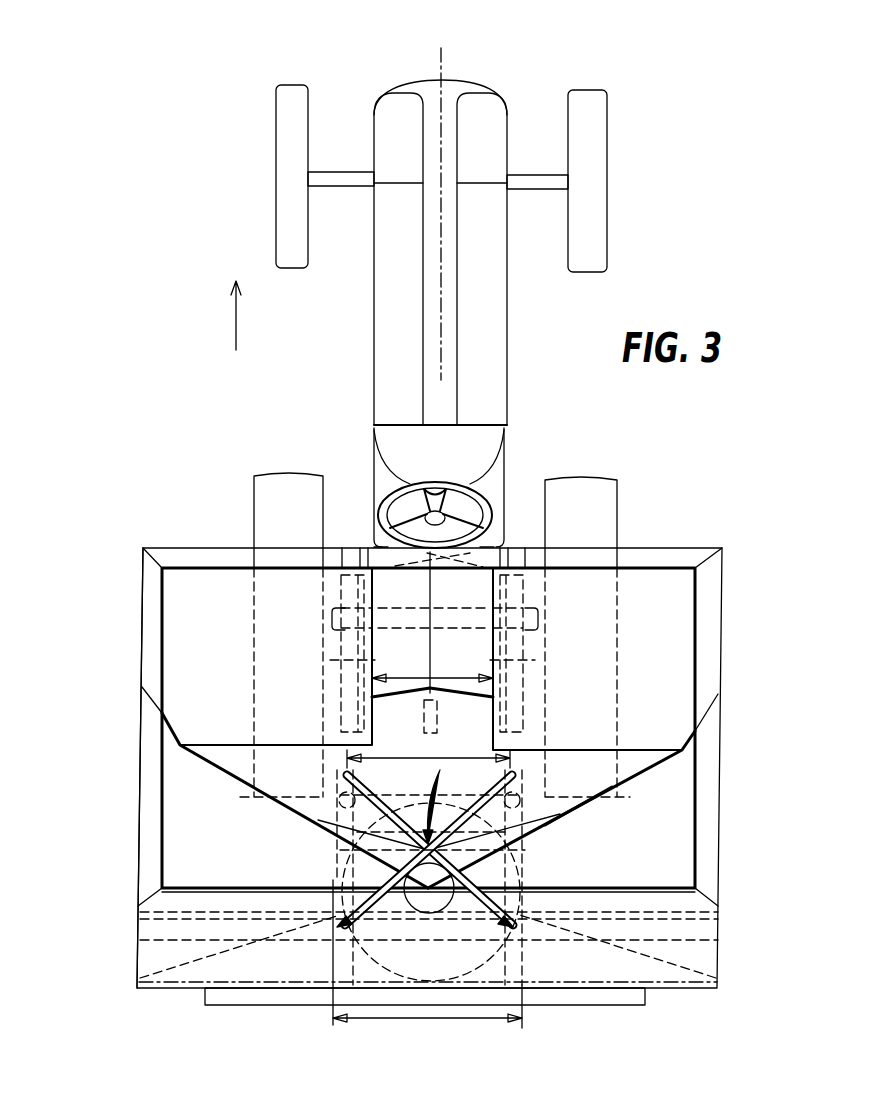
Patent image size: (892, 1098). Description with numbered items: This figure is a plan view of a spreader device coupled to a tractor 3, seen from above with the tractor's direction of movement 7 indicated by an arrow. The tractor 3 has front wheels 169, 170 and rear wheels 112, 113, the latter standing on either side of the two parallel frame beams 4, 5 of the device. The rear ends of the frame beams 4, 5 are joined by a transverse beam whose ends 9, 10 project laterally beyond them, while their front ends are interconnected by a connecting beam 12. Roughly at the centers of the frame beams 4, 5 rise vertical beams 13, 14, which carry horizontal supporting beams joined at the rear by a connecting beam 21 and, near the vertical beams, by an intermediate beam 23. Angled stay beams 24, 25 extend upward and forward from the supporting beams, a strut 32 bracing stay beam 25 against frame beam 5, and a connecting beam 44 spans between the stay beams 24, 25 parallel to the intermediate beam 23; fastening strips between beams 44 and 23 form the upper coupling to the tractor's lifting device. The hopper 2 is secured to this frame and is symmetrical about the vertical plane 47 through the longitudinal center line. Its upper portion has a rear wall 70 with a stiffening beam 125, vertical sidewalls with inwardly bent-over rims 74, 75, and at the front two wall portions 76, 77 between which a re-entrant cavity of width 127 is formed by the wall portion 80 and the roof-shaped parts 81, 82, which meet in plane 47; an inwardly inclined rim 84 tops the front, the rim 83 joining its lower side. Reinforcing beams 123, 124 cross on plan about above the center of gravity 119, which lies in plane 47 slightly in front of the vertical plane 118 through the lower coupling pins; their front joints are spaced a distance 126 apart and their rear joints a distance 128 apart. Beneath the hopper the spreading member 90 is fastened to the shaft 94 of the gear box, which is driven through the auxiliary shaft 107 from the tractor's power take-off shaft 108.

The hopper 2 is at (670, 550).
The tractor 3 is at (494, 341).
The frame beam 4 is at (330, 958).
The frame beam 5 is at (525, 958).
The direction of movement 7 is at (233, 320).
The end of transverse beam 9 is at (282, 995).
The end of transverse beam 10 is at (635, 1005).
The connecting beam 12 is at (410, 612).
The vertical beam 13 is at (313, 812).
The vertical beam 14 is at (532, 790).
The connecting beam 21 is at (462, 950).
The intermediate beam 23 is at (516, 865).
The stay beam 24 is at (345, 590).
The stay beam 25 is at (520, 599).
The strut 32 is at (345, 690).
The connecting beam 44 is at (386, 741).
The vertical plane 47 is at (425, 1020).
The rear wall 70 is at (272, 880).
The inwardly bent-over rim 74 is at (150, 629).
The inwardly bent-over rim 75 is at (706, 618).
The front wall portion 76 is at (178, 658).
The front wall portion 77 is at (680, 670).
The wall portion 80 is at (493, 713).
The roof-shaped wall part 81 is at (375, 543).
The roof-shaped wall part 82 is at (475, 575).
The rim 83 is at (430, 656).
The inwardly inclined rim 84 is at (173, 548).
The spreading member 90 is at (326, 877).
The shaft 94 is at (414, 917).
The auxiliary shaft 107 is at (420, 766).
The power take-off shaft 108 is at (429, 708).
The rear wheel 112 is at (258, 526).
The rear wheel 113 is at (598, 507).
The vertical plane 118 is at (604, 805).
The center of gravity 119 is at (432, 845).
The reinforcing beam 123 is at (398, 786).
The reinforcing beam 124 is at (527, 847).
The stiffening beam 125 is at (250, 920).
The distance 126 is at (492, 720).
The distance 127 is at (458, 672).
The distance 128 is at (452, 1020).
The front wheel 169 is at (288, 178).
The front wheel 170 is at (598, 187).